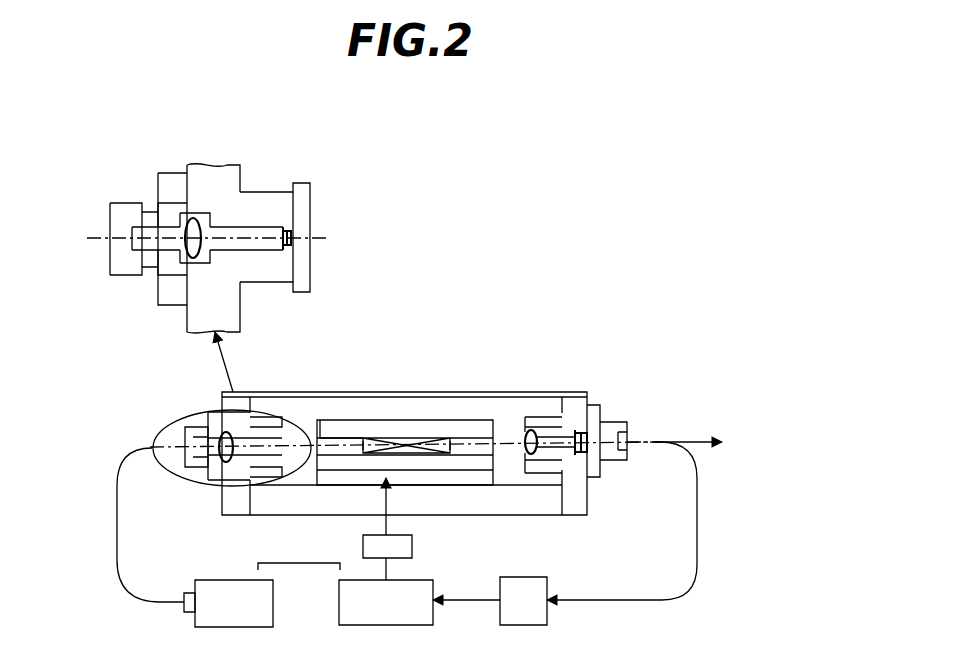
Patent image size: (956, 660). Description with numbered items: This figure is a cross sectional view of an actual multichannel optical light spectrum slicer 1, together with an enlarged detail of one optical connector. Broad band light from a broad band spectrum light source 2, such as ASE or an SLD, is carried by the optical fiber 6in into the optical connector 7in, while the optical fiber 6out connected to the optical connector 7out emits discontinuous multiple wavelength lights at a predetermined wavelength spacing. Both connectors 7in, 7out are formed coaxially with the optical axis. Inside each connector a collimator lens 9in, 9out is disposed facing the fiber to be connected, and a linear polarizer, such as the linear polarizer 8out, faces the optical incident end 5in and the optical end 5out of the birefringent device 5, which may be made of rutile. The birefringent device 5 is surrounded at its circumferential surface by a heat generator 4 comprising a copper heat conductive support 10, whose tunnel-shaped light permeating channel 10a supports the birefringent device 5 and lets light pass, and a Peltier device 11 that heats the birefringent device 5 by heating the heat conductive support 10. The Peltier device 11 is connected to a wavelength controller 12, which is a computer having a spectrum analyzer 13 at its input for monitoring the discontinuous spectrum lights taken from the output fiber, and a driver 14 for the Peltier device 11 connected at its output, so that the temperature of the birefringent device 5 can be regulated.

The multichannel optical light spectrum slicer 1 is at (483, 277).
The broad band spectrum light source 2 is at (232, 602).
The heat generator 4 is at (299, 585).
The birefringent device 5 is at (407, 450).
The optical incident end 5in is at (362, 451).
The optical end 5out is at (450, 452).
The optical fiber 6in is at (133, 458).
The optical fiber 6out is at (640, 437).
The optical connector 7in is at (200, 483).
The optical connector 7out is at (602, 400).
The linear polarizer 8out is at (530, 437).
The collimator lens 9in is at (226, 447).
The collimator lens 9out is at (587, 453).
The heat conductive support 10 is at (378, 462).
The light permeating channel 10a is at (335, 437).
The Peltier device 11 is at (348, 477).
The wavelength controller 12 is at (422, 598).
The spectrum analyzer 13 is at (525, 597).
The driver 14 is at (412, 548).